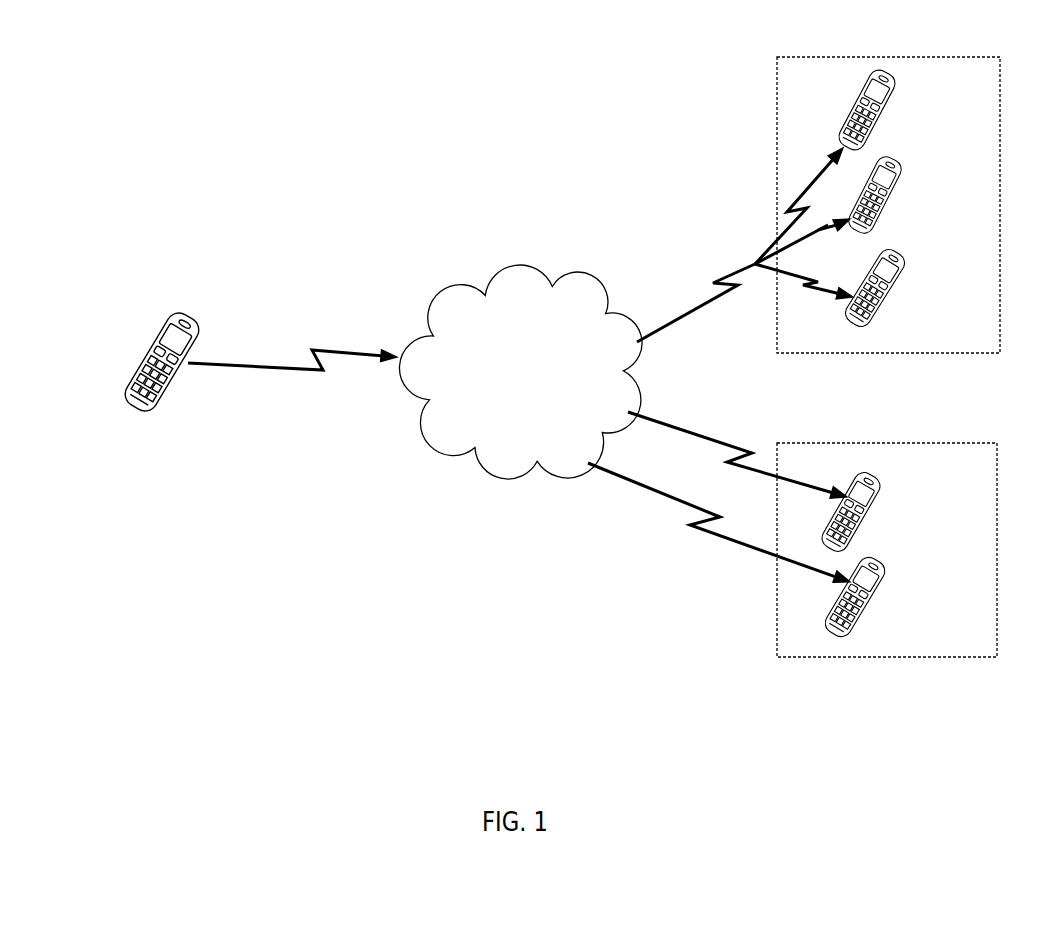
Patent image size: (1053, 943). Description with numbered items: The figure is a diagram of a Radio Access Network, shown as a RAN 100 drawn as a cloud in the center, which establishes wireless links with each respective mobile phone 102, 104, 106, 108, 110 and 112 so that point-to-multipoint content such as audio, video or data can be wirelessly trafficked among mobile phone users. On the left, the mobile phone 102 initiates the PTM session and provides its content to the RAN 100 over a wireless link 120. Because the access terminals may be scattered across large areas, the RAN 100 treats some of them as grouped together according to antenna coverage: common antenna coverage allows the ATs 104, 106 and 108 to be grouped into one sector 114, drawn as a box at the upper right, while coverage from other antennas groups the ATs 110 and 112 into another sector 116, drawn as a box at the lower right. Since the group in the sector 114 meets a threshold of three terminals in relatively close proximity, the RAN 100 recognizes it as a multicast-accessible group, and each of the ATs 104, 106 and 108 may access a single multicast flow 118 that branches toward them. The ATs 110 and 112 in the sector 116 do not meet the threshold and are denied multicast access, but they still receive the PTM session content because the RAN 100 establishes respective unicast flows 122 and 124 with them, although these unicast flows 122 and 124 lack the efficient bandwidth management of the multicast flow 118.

The RAN 100 is at (590, 273).
The mobile phone 102 is at (137, 415).
The mobile phone 104 is at (888, 122).
The mobile phone 106 is at (892, 203).
The mobile phone 108 is at (890, 298).
The mobile phone 110 is at (873, 513).
The mobile phone 112 is at (878, 598).
The sector 114 is at (970, 55).
The sector 116 is at (970, 441).
The multicast flow 118 is at (698, 307).
The wireless link 120 is at (333, 348).
The unicast flow 122 is at (727, 442).
The unicast flow 124 is at (672, 500).